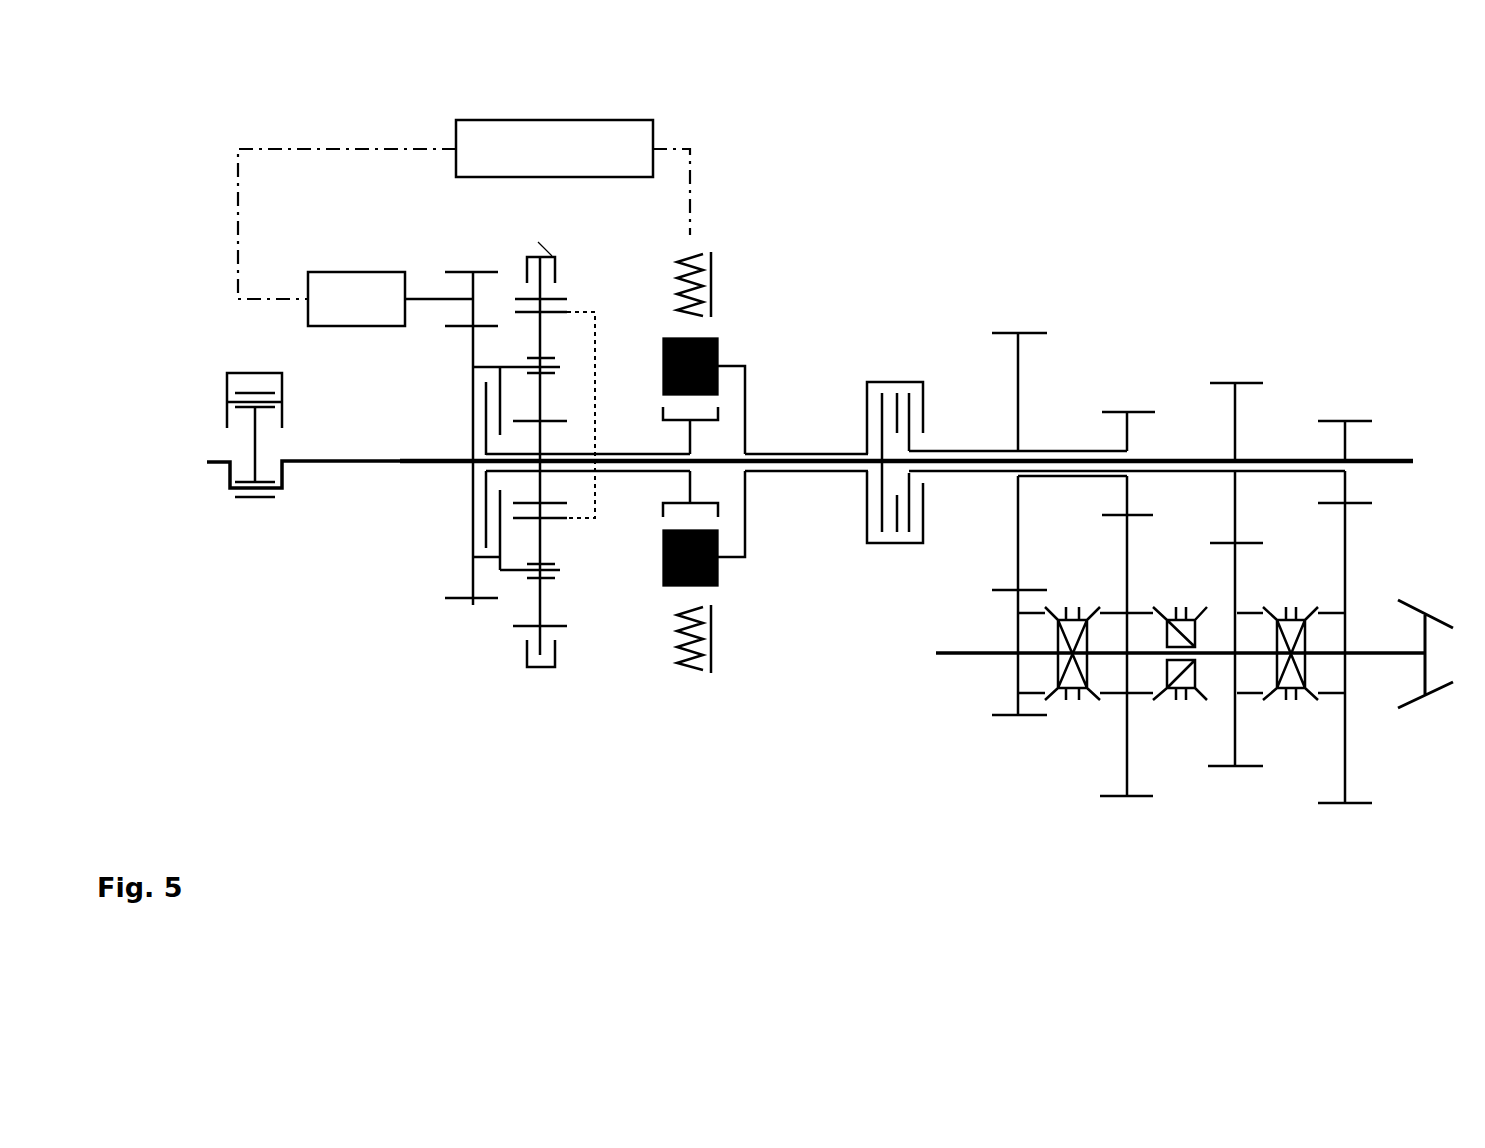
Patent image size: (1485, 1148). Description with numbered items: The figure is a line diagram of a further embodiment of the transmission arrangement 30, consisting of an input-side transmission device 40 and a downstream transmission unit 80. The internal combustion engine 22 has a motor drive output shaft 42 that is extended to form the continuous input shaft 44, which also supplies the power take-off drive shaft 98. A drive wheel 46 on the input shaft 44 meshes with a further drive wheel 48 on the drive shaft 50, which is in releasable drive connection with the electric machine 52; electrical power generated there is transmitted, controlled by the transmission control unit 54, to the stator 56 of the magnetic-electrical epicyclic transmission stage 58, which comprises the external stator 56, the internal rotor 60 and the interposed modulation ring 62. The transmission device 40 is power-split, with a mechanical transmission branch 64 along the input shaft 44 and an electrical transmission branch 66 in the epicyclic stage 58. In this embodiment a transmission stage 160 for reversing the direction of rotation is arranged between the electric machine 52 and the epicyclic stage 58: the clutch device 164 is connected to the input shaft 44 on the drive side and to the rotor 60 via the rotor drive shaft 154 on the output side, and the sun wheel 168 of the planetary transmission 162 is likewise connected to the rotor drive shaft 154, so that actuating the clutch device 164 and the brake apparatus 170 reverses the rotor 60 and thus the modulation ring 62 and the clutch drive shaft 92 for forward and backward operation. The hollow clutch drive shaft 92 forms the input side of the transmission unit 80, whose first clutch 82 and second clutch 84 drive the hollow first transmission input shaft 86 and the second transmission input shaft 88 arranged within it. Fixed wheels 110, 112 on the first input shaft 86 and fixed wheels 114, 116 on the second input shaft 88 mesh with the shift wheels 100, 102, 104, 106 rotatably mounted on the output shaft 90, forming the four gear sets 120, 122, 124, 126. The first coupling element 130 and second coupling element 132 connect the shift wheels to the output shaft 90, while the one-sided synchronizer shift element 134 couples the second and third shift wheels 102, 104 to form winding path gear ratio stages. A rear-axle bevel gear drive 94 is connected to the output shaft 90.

The internal combustion engine 22 is at (227, 473).
The transmission arrangement 30 is at (953, 282).
The transmission device 40 is at (760, 448).
The motor drive output shaft 42 is at (308, 465).
The input shaft 44 is at (420, 465).
The drive wheel 46 is at (475, 602).
The drive wheel 48 is at (475, 270).
The drive shaft 50 is at (437, 295).
The electric machine 52 is at (341, 312).
The transmission control unit 54 is at (538, 163).
The stator 56 is at (700, 253).
The magnetic-electrical epicyclic transmission stage 58 is at (740, 327).
The rotor 60 is at (663, 507).
The modulation ring 62 is at (718, 355).
The mechanical transmission branch 64 is at (578, 455).
The electrical transmission branch 66 is at (697, 191).
The transmission unit 80 is at (1204, 514).
The first clutch 82 is at (916, 547).
The second clutch 84 is at (878, 547).
The first transmission input shaft 86 is at (932, 447).
The second transmission input shaft 88 is at (968, 451).
The output shaft 90 is at (1365, 658).
The clutch drive shaft 92 is at (830, 453).
The rear-axle bevel gear drive 94 is at (1440, 632).
The power take-off drive shaft 98 is at (1393, 462).
The first shift wheel 100 is at (1010, 716).
The second shift wheel 102 is at (1115, 797).
The third shift wheel 104 is at (1228, 767).
The fourth shift wheel 106 is at (1338, 805).
The first fixed wheel 110 is at (1038, 332).
The second fixed wheel 112 is at (1133, 410).
The third fixed wheel 114 is at (1247, 382).
The fourth fixed wheel 116 is at (1353, 420).
The first gear set 120 is at (1018, 303).
The second gear set 122 is at (1127, 303).
The third gear set 124 is at (1235, 303).
The fourth gear set 126 is at (1345, 303).
The first coupling element 130 is at (1068, 580).
The second coupling element 132 is at (1290, 580).
The shift element 134 is at (1181, 580).
The rotor drive shaft 154 is at (638, 452).
The transmission stage 160 is at (531, 684).
The planetary transmission 162 is at (566, 635).
The clutch device 164 is at (470, 555).
The sun wheel 168 is at (543, 485).
The brake apparatus 170 is at (547, 668).